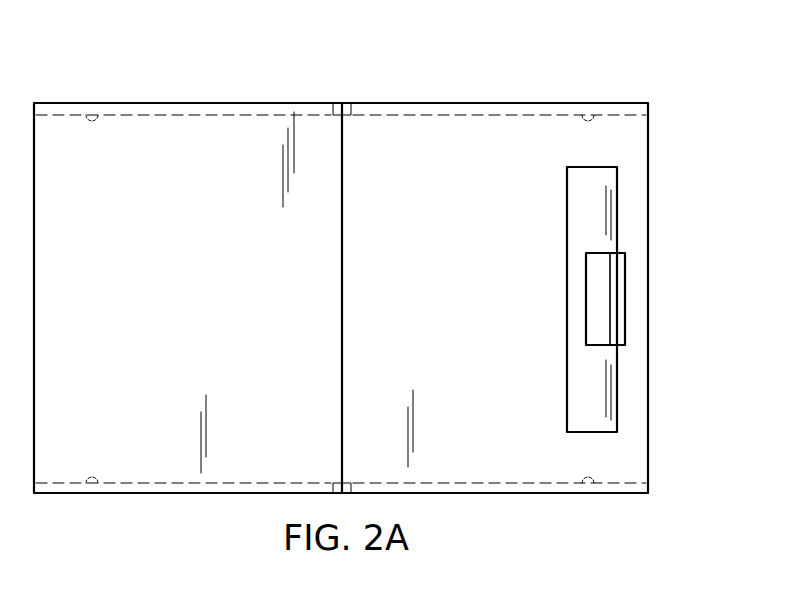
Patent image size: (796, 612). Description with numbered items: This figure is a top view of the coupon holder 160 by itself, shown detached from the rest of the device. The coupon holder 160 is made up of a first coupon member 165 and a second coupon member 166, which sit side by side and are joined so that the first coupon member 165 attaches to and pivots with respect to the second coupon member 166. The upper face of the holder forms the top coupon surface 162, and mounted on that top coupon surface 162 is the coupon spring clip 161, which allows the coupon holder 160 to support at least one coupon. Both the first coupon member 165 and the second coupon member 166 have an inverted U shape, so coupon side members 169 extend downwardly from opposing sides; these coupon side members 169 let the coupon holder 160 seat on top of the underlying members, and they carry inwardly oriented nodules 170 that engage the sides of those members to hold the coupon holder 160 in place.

The coupon holder 160 is at (704, 118).
The coupon spring clip 161 is at (600, 205).
The top coupon surface 162 is at (510, 128).
The first coupon member 165 is at (453, 103).
The second coupon member 166 is at (242, 103).
The coupon side members 169 is at (66, 483).
The nodules 170 is at (95, 478).